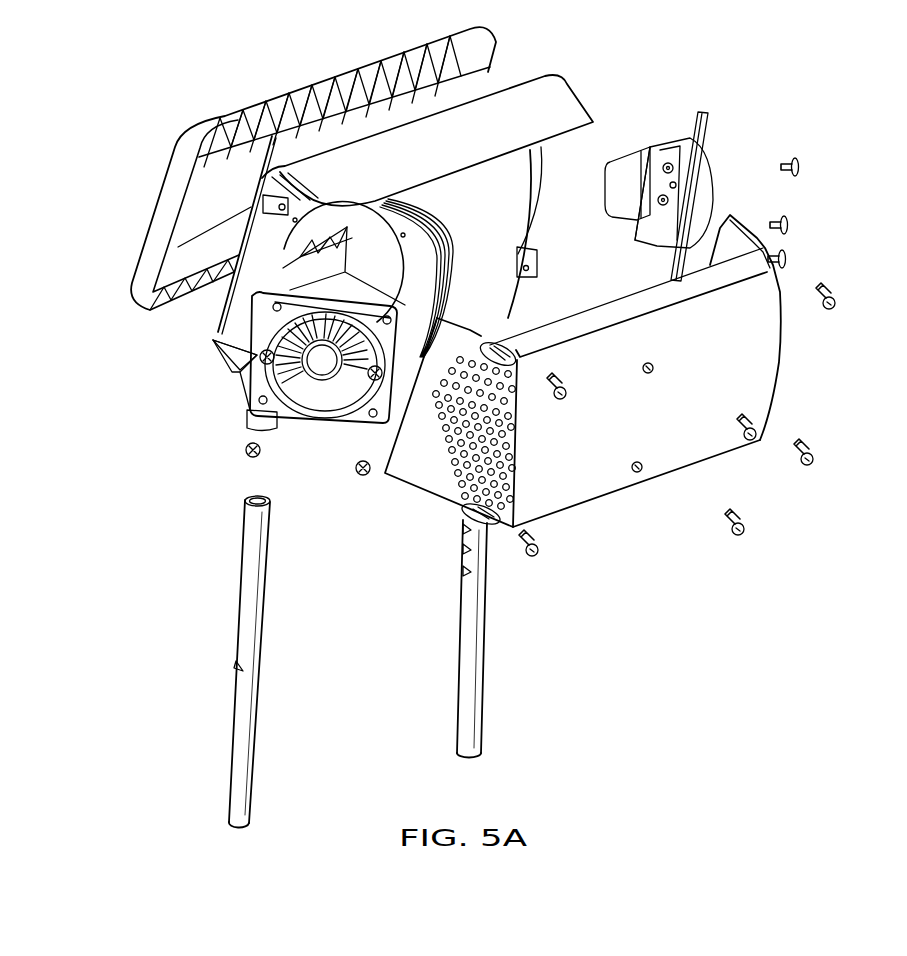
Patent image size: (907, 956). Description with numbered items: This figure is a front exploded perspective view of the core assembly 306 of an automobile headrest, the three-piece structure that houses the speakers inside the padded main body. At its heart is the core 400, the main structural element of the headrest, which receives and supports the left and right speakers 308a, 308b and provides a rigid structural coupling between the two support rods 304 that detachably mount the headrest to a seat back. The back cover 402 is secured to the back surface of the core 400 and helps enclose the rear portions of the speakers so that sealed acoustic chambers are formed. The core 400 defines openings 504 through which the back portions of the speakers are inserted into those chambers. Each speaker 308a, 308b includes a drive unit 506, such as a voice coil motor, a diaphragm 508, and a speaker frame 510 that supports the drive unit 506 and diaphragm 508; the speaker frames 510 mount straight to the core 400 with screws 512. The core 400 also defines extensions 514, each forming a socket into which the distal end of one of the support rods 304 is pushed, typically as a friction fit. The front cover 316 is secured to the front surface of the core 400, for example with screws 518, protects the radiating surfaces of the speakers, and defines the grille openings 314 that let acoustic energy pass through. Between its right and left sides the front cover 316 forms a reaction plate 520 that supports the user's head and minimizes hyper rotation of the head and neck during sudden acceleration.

The core assembly 306 is at (143, 90).
The back cover 402 is at (345, 78).
The core 400 is at (520, 90).
The openings 504 is at (533, 208).
The drive unit 506 is at (624, 167).
The diaphragm 508 is at (710, 188).
The speaker frame 510 is at (710, 125).
The screws 512 is at (792, 259).
The left speaker 308a is at (714, 162).
The right speaker 308b is at (245, 393).
The extensions 514 is at (250, 420).
The grille openings 314 is at (440, 470).
The front cover 316 is at (608, 477).
The reaction plate 520 is at (678, 442).
The screws 518 is at (843, 303).
The support rods 304 is at (228, 736).